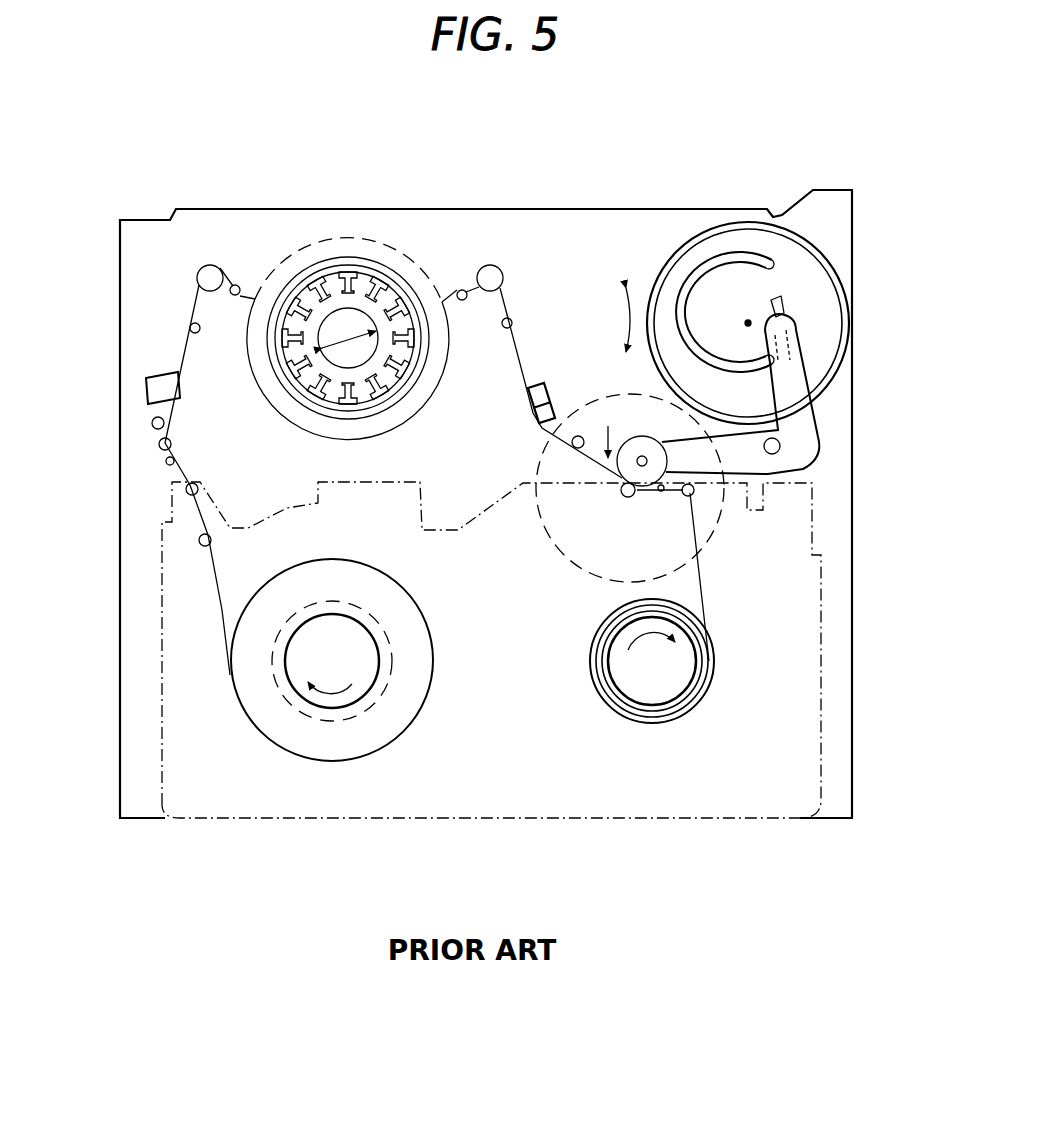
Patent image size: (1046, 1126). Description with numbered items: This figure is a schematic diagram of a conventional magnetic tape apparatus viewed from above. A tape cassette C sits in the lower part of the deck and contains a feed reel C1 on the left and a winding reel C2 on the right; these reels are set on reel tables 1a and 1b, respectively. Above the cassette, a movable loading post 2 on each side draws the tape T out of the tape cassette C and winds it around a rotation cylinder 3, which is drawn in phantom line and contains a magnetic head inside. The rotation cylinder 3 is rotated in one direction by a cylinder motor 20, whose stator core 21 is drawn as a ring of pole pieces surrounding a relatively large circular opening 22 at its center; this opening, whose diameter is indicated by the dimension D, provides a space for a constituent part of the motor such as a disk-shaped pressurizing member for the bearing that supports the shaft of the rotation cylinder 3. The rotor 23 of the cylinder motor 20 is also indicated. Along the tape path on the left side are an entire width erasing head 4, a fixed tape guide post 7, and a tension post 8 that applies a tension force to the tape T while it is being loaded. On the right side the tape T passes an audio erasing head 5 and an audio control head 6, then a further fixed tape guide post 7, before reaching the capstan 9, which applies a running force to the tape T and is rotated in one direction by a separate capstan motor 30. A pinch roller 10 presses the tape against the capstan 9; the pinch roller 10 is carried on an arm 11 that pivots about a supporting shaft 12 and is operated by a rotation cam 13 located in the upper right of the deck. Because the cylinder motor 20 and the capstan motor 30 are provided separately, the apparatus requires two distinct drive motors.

The movable loading post 2 is at (210, 275).
The stator core 21 is at (300, 268).
The rotation cylinder 3 is at (356, 237).
The cylinder motor 20 is at (393, 256).
The circular opening 22 is at (340, 362).
The rotor 23 is at (420, 272).
The drum diameter D is at (349, 331).
The tape T is at (520, 340).
The entire width erasing head 4 is at (145, 392).
The tape guide post 7 is at (152, 423).
The tension post 8 is at (160, 446).
The audio erasing head 5 is at (535, 402).
The audio control head 6 is at (553, 420).
The capstan 9 is at (628, 497).
The pinch roller 10 is at (650, 487).
The arm 11 is at (720, 472).
The supporting shaft 12 is at (781, 446).
The rotation cam 13 is at (826, 320).
The capstan motor 30 is at (705, 543).
The tape cassette C is at (410, 480).
The feed reel C1 is at (295, 656).
The reel table 1a is at (333, 721).
The winding reel C2 is at (652, 705).
The reel table 1b is at (712, 662).